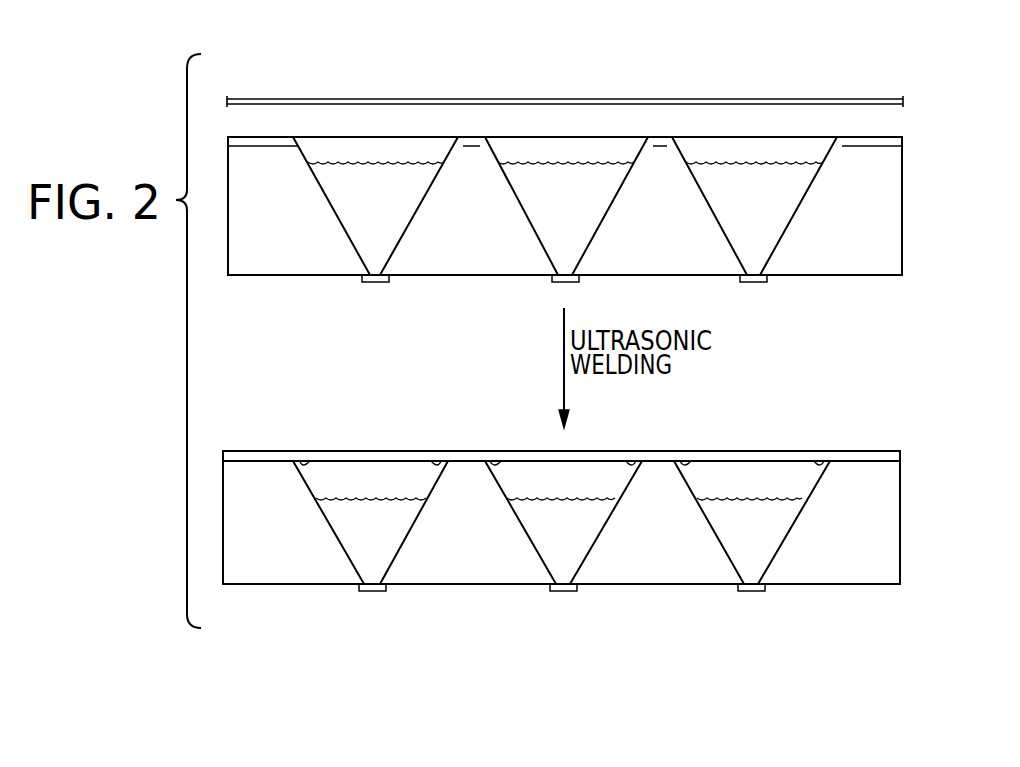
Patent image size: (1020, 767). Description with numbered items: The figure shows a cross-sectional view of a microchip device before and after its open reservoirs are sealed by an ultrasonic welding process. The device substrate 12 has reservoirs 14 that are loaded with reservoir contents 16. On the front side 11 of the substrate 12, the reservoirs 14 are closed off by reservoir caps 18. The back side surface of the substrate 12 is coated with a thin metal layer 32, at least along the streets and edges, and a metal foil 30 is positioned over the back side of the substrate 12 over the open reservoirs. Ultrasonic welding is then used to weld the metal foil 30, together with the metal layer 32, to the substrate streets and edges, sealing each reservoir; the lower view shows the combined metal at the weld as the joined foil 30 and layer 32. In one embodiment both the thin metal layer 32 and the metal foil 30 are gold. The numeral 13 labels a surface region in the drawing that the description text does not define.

The front side 11 is at (462, 277).
The device substrate 12 is at (274, 247).
The top surface of substrate 13 is at (251, 146).
The reservoirs 14 is at (337, 151).
The reservoir contents 16 is at (360, 215).
The reservoir caps 18 is at (377, 284).
The metal foil 30 is at (261, 98).
The thin metal layer 32 is at (278, 135).